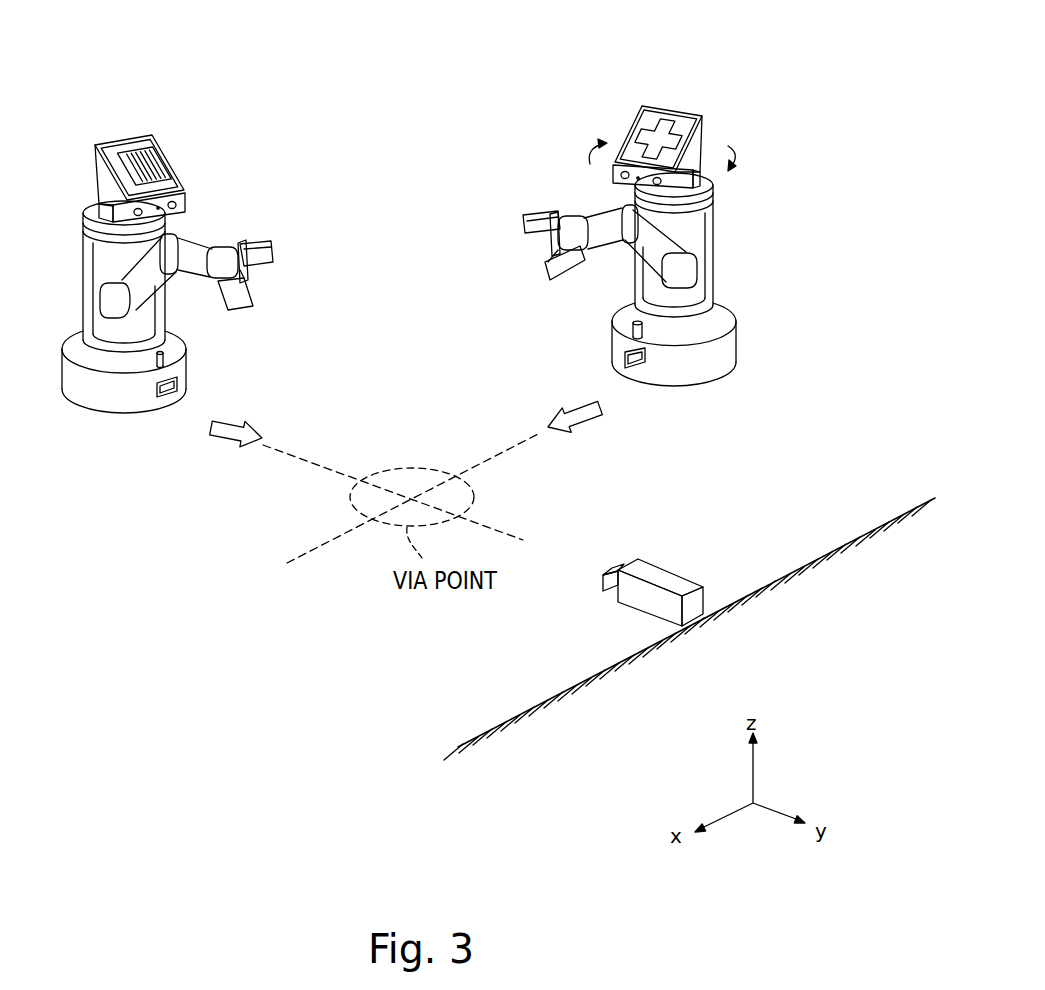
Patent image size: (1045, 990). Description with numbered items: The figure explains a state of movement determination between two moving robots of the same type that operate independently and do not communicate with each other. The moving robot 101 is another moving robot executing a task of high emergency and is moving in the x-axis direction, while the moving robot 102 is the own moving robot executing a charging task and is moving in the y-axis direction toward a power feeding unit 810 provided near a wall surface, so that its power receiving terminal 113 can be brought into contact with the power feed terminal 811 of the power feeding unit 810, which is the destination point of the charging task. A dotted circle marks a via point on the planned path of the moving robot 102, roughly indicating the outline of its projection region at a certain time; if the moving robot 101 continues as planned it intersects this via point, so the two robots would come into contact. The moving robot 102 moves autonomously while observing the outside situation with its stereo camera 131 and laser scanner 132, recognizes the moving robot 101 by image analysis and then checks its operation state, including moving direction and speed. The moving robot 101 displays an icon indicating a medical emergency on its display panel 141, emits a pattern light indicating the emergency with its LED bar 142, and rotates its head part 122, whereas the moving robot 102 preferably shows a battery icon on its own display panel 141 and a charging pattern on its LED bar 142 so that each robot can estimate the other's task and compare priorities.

The moving robot 101 is at (699, 76).
The moving robot 102 is at (173, 100).
The power receiving terminal 113 is at (178, 388).
The head part 122 is at (700, 163).
The stereo camera 131 is at (187, 197).
The laser scanner 132 is at (165, 357).
The display panel 141 is at (110, 145).
The LED bar 142 is at (84, 236).
The power feeding unit 810 is at (667, 577).
The power feed terminal 811 is at (612, 593).